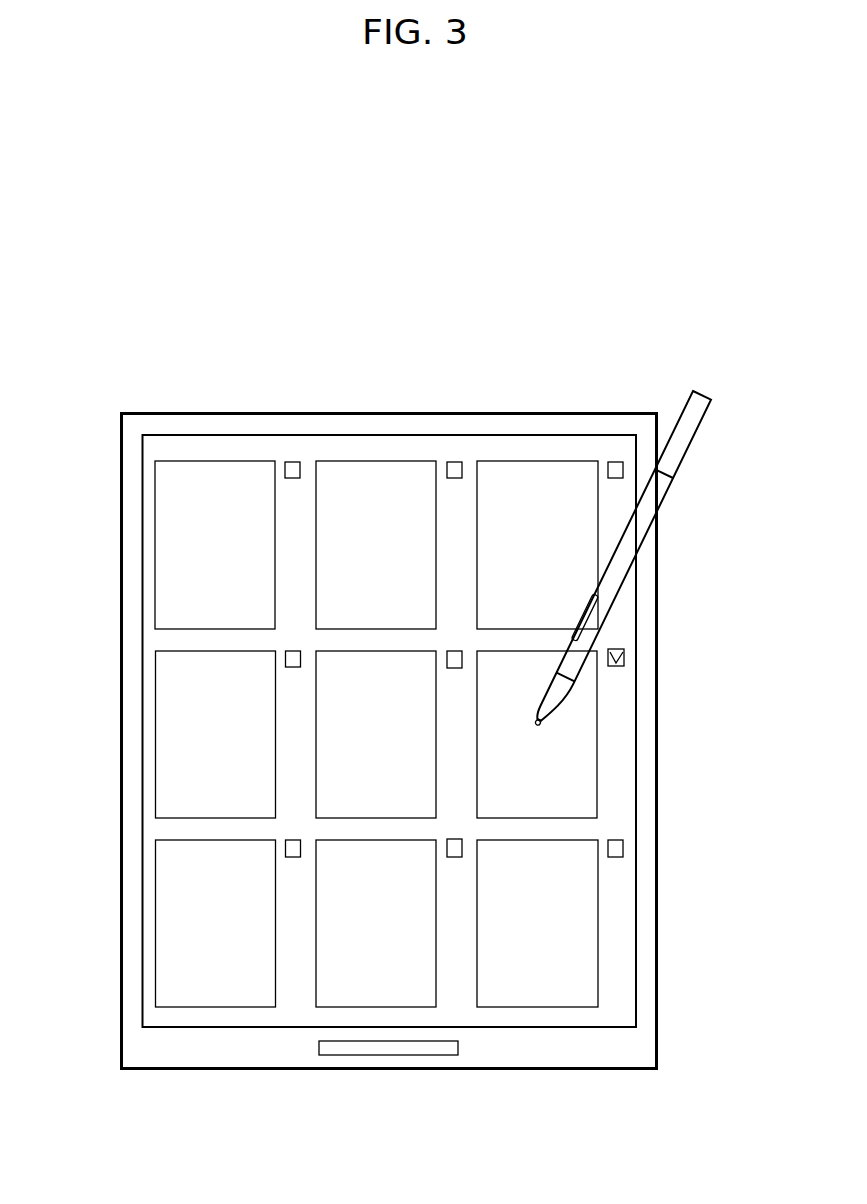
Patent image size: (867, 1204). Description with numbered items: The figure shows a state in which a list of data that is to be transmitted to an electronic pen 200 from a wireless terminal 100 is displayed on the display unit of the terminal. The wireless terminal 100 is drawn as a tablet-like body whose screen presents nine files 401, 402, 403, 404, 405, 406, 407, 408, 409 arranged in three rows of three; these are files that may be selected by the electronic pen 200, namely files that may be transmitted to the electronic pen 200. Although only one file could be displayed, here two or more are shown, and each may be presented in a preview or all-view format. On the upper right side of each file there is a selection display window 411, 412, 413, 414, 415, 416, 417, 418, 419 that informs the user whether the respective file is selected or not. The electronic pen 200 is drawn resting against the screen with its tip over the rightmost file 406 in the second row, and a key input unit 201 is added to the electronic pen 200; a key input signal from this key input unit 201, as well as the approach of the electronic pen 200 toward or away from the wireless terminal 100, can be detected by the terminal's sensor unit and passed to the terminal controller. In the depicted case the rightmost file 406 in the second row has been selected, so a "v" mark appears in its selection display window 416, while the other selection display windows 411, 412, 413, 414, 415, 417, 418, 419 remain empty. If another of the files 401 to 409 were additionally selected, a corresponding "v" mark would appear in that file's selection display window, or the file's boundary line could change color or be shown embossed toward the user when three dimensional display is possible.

The wireless terminal 100 is at (145, 412).
The electronic pen 200 is at (685, 460).
The key input unit 201 is at (590, 618).
The file 401 is at (215, 460).
The file 402 is at (376, 460).
The file 403 is at (538, 460).
The file 404 is at (155, 734).
The file 405 is at (437, 734).
The file 406 is at (598, 720).
The file 407 is at (155, 923).
The file 408 is at (436, 923).
The file 409 is at (598, 912).
The selection display window 411 is at (293, 460).
The selection display window 412 is at (455, 460).
The selection display window 413 is at (617, 460).
The selection display window 414 is at (283, 658).
The selection display window 415 is at (447, 652).
The selection display window 416 is at (626, 658).
The selection display window 417 is at (283, 847).
The selection display window 418 is at (447, 840).
The selection display window 419 is at (625, 849).